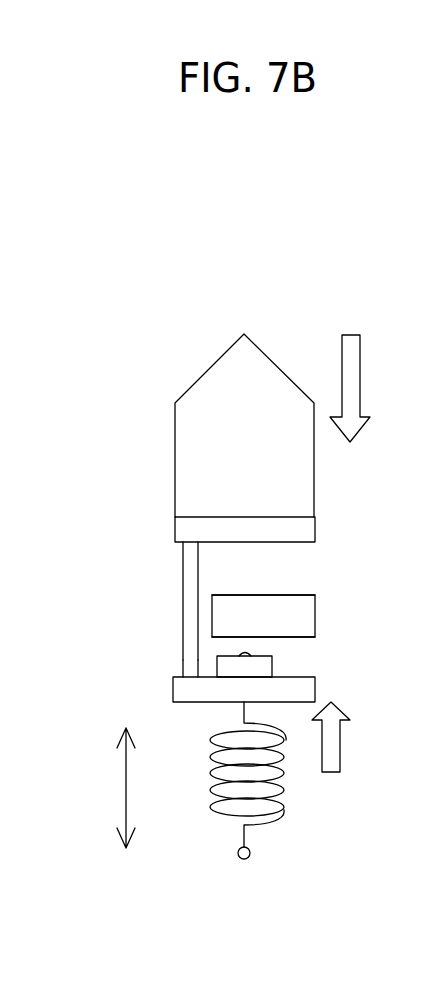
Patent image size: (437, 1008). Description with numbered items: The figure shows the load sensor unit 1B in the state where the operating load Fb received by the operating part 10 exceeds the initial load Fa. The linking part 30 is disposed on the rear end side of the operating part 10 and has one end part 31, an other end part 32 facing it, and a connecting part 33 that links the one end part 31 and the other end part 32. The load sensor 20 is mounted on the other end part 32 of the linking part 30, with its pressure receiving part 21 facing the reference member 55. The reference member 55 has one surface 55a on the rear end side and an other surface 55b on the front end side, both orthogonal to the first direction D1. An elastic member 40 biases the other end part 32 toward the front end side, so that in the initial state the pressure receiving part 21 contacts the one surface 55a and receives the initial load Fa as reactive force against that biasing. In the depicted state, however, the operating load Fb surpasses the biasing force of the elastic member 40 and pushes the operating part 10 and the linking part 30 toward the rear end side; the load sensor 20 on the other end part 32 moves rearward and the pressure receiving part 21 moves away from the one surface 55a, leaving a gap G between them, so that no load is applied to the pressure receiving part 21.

The load sensor unit 1B is at (285, 228).
The operating part 10 is at (311, 488).
The one end part 31 is at (178, 529).
The linking part 30 is at (183, 598).
The connecting part 33 is at (193, 648).
The other end part 32 is at (178, 692).
The reference member 55 is at (303, 607).
The one surface 55a is at (325, 640).
The other surface 55b is at (272, 595).
The gap G is at (276, 565).
The pressure receiving part 21 is at (248, 653).
The load sensor 20 is at (268, 663).
The elastic member 40 is at (288, 800).
The operating load Fb is at (366, 388).
The initial load Fa is at (347, 737).
The first direction D1 is at (124, 790).